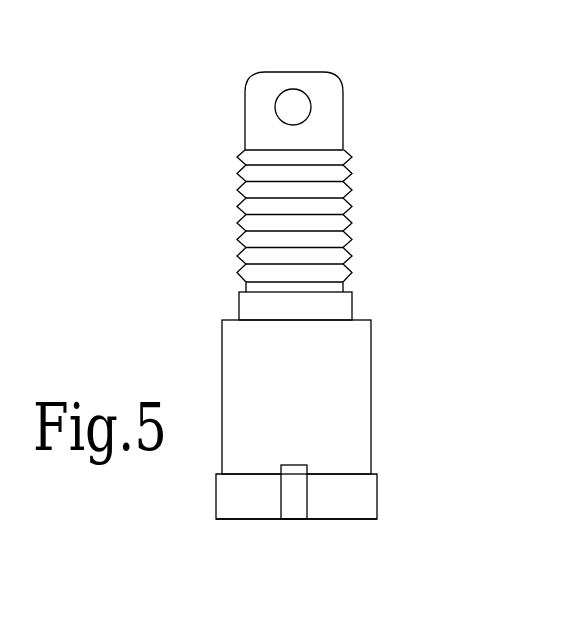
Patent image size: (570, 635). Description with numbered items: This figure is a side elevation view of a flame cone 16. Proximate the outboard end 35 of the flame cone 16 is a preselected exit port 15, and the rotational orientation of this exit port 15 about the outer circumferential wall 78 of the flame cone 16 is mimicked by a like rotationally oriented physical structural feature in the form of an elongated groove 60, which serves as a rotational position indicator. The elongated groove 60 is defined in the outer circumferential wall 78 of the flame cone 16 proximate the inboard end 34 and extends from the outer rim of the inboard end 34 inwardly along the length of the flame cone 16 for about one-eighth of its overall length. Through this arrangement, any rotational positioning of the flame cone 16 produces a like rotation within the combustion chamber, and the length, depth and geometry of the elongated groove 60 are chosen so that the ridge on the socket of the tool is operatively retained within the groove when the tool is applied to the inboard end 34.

The exit port 15 is at (292, 107).
The outboard end 35 is at (322, 72).
The flame cone 16 is at (452, 367).
The outer circumferential wall 78 is at (377, 502).
The inboard end 34 is at (226, 520).
The elongated groove 60 is at (294, 495).